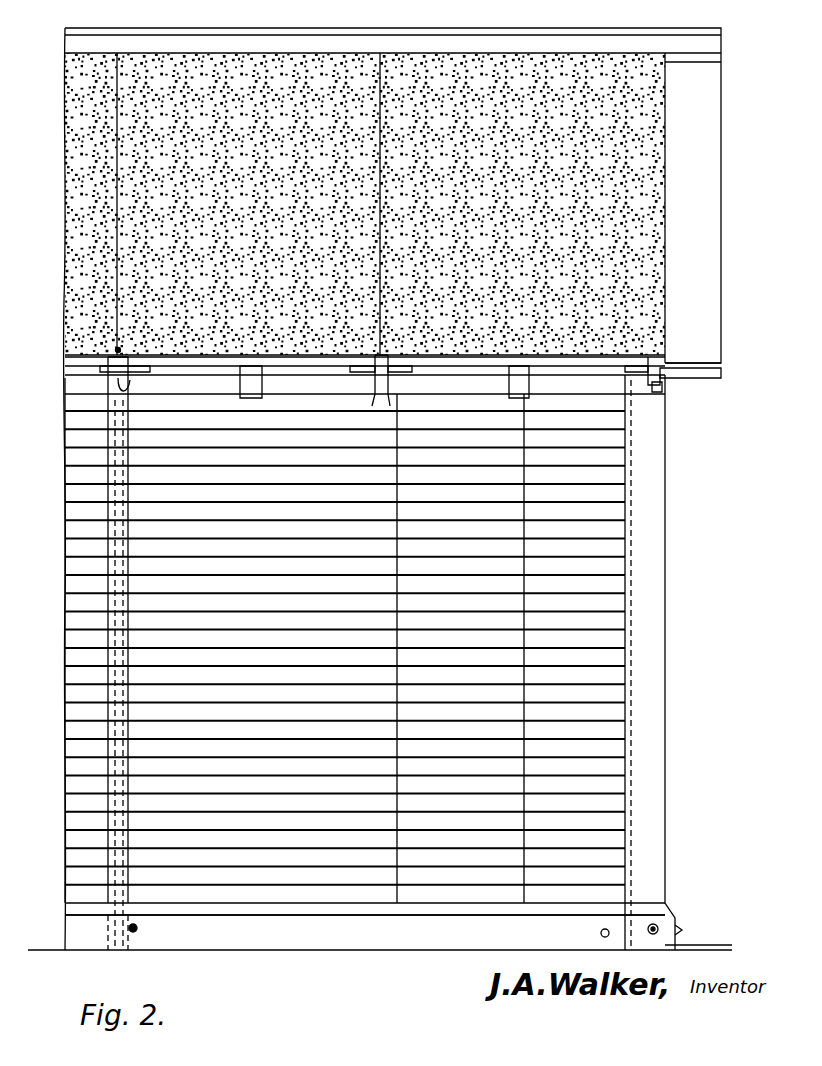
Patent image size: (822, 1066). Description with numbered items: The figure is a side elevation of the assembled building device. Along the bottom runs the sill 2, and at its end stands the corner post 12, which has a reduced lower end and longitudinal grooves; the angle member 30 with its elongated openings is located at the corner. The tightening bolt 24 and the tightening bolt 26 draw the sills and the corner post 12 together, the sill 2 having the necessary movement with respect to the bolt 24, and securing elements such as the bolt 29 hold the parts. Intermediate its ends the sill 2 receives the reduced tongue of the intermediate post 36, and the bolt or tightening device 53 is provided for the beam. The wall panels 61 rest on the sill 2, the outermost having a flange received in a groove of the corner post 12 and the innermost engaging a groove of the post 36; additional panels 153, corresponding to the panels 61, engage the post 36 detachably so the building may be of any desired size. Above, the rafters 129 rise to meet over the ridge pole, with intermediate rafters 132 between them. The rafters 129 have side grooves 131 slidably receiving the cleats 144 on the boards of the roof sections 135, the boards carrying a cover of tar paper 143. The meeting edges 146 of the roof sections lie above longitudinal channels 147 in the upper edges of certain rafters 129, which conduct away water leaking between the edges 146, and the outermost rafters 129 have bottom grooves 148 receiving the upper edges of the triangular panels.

The sill 2 is at (432, 933).
The corner post 12 is at (648, 762).
The tightening bolt 24 is at (657, 926).
The tightening bolt 26 is at (682, 930).
The securing element 29 is at (601, 933).
The angle member 30 is at (672, 945).
The intermediate post 36 is at (115, 830).
The bolt or tightening device 53 is at (133, 933).
The wall panel 61 is at (322, 875).
The rafter 129 is at (118, 392).
The side groove 131 is at (690, 399).
The intermediate rafter 132 is at (248, 386).
The roof section 135 is at (100, 105).
The cover of tar paper 143 is at (645, 318).
The cleat 144 is at (110, 372).
The meeting edge 146 is at (380, 97).
The longitudinal channel 147 is at (118, 345).
The bottom groove 148 is at (654, 400).
The additional panel 153 is at (95, 765).